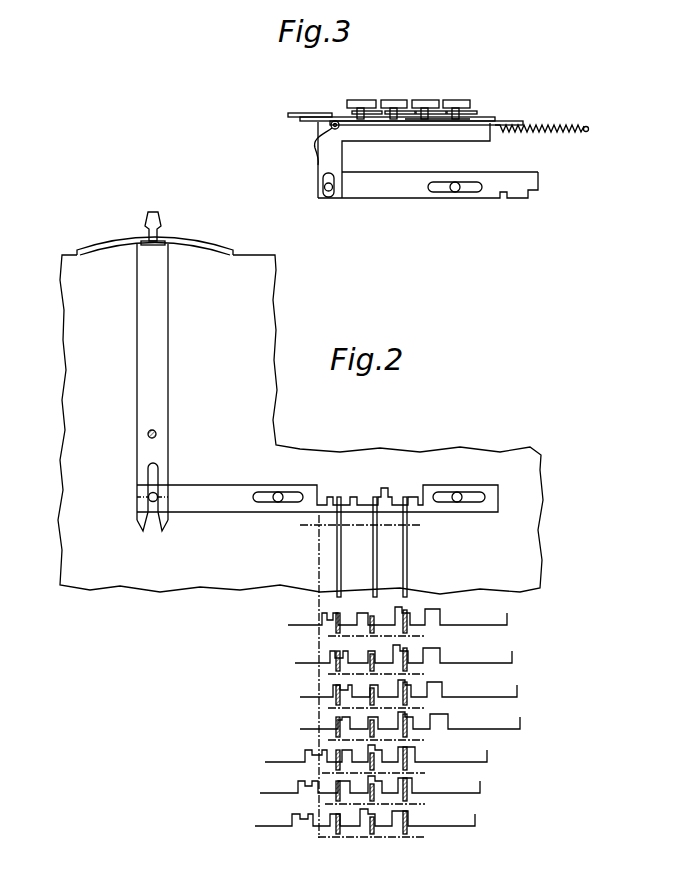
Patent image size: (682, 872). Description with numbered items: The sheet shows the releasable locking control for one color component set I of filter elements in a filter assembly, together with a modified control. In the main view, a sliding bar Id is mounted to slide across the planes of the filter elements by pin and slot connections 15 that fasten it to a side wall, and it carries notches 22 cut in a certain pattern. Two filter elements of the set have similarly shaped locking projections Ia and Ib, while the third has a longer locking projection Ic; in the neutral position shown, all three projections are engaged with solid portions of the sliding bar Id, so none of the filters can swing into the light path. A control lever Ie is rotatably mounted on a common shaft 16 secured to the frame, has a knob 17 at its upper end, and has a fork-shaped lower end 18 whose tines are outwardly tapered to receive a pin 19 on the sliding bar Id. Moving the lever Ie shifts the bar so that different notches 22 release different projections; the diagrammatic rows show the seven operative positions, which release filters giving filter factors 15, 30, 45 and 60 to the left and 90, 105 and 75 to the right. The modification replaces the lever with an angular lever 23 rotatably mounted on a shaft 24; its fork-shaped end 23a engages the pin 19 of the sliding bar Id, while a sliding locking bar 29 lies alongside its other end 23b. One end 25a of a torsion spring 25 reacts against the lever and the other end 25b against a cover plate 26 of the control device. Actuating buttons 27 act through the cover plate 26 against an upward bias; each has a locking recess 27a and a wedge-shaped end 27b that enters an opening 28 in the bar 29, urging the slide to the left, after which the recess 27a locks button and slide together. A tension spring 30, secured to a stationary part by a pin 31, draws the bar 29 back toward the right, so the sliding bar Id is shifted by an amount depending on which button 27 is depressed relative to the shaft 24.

In FIG. 2, the pin and slot connections 15 is at (278, 491).
In FIG. 2, the common shaft 16 is at (157, 433).
In FIG. 2, the knob 17 is at (153, 211).
In FIG. 2, the fork-shaped lower end 18 is at (143, 476).
In FIG. 3, the pin 19 is at (329, 191).
In FIG. 2, the pin 19 is at (152, 503).
In FIG. 3, the notches 22 is at (502, 197).
In FIG. 2, the notches 22 is at (337, 500).
In FIG. 3, the angular lever 23 is at (330, 154).
In FIG. 3, the fork-shaped end of angular lever 23a is at (318, 166).
In FIG. 3, the end of angular lever 23b is at (480, 136).
In FIG. 3, the shaft 24 is at (338, 117).
In FIG. 3, the torsion spring 25 is at (318, 137).
In FIG. 3, the spring end 25a is at (313, 152).
In FIG. 3, the spring end 25b is at (312, 117).
In FIG. 3, the cover plate 26 is at (300, 113).
In FIG. 3, the actuating buttons 27 is at (367, 100).
In FIG. 3, the locking recess 27a is at (428, 108).
In FIG. 3, the wedge-shaped end 27b is at (455, 123).
In FIG. 3, the opening 28 is at (462, 117).
In FIG. 3, the sliding locking bar 29 is at (500, 121).
In FIG. 3, the tension spring 30 is at (526, 133).
In FIG. 2, the tension spring 30 is at (104, 243).
In FIG. 3, the pin 31 is at (586, 126).
In FIG. 2, the filter factor 45 is at (90, 246).
In FIG. 2, the filter factor 60 is at (75, 251).
In FIG. 2, the filter factor 75 is at (225, 248).
In FIG. 2, the filter factor 90 is at (190, 240).
In FIG. 2, the filter factor 105 is at (206, 243).
In FIG. 2, the filter set I is at (404, 563).
In FIG. 2, the locking projection Ia is at (338, 517).
In FIG. 2, the locking projection Ib is at (374, 516).
In FIG. 2, the longer locking projection Ic is at (408, 516).
In FIG. 3, the sliding bar Id is at (396, 185).
In FIG. 2, the control lever Ie is at (163, 310).